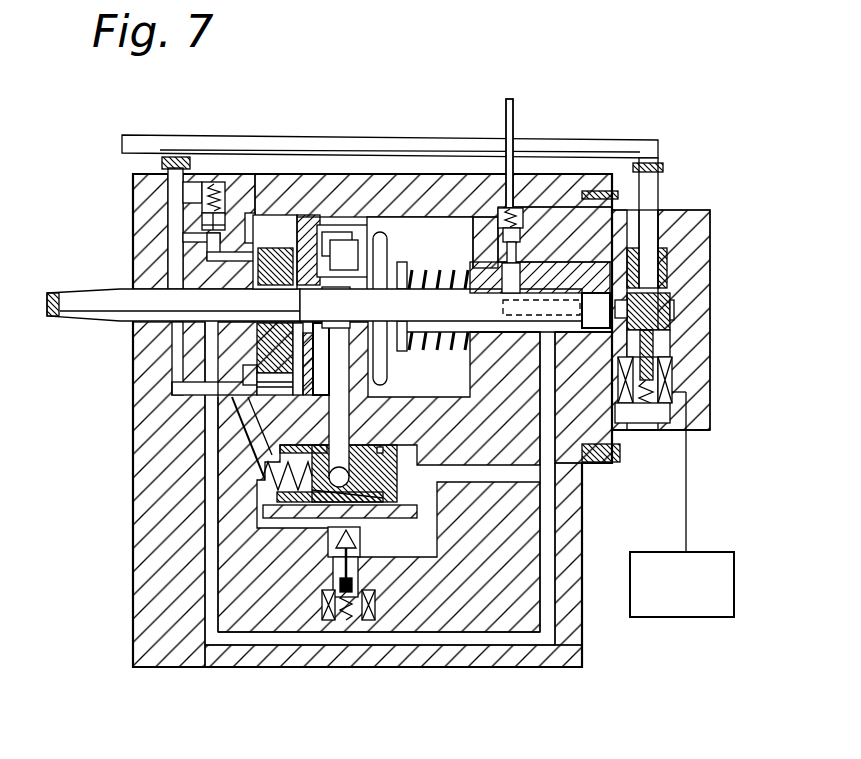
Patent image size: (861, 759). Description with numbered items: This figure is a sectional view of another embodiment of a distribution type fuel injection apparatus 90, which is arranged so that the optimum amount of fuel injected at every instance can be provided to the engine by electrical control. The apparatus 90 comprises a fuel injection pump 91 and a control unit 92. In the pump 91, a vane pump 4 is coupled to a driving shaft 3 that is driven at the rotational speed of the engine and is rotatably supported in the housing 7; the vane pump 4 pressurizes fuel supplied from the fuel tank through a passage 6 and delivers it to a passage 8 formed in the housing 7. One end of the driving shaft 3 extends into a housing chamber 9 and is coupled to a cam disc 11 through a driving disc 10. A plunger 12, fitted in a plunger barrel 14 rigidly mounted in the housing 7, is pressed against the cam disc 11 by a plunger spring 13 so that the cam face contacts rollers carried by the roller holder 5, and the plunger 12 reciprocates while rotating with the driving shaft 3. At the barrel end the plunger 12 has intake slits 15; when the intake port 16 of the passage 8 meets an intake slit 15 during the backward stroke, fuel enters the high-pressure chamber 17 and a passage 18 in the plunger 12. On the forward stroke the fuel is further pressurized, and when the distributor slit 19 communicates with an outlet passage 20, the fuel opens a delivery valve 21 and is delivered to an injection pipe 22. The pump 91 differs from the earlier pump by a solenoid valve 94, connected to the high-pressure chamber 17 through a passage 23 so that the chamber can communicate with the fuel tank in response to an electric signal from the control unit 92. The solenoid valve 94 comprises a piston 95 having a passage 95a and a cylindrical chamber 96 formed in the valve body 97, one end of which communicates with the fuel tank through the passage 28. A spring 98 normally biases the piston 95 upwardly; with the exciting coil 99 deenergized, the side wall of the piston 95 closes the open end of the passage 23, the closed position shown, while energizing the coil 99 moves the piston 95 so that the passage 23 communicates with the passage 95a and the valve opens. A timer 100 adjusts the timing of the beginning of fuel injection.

The driving shaft 3 is at (130, 285).
The vane pump 4 is at (277, 210).
The roller holder 5 is at (323, 220).
The passage 6 is at (148, 142).
The housing 7 is at (135, 410).
The passage 8 is at (497, 640).
The housing chamber 9 is at (458, 228).
The driving disc 10 is at (357, 290).
The cam disc 11 is at (397, 243).
The plunger 12 is at (455, 350).
The plunger spring 13 is at (422, 350).
The plunger barrel 14 is at (590, 280).
The intake slits 15 is at (562, 338).
The intake port 16 is at (537, 348).
The high-pressure chamber 17 is at (607, 353).
The passage 18 is at (558, 298).
The distributor slit 19 is at (477, 267).
The outlet passage 20 is at (517, 267).
The delivery valve 21 is at (530, 208).
The injection pipe 22 is at (514, 108).
The passage 23 is at (617, 257).
The passage 28 is at (640, 140).
The fuel injection apparatus 90 is at (588, 108).
The fuel injection pump 91 is at (130, 520).
The control unit 92 is at (717, 552).
The solenoid valve 94 is at (685, 208).
The piston 95 is at (650, 343).
The passage 95a is at (647, 292).
The cylindrical chamber 96 is at (662, 352).
The valve body 97 is at (703, 210).
The spring 98 is at (655, 432).
The exciting coil 99 is at (620, 433).
The timer 100 is at (417, 443).